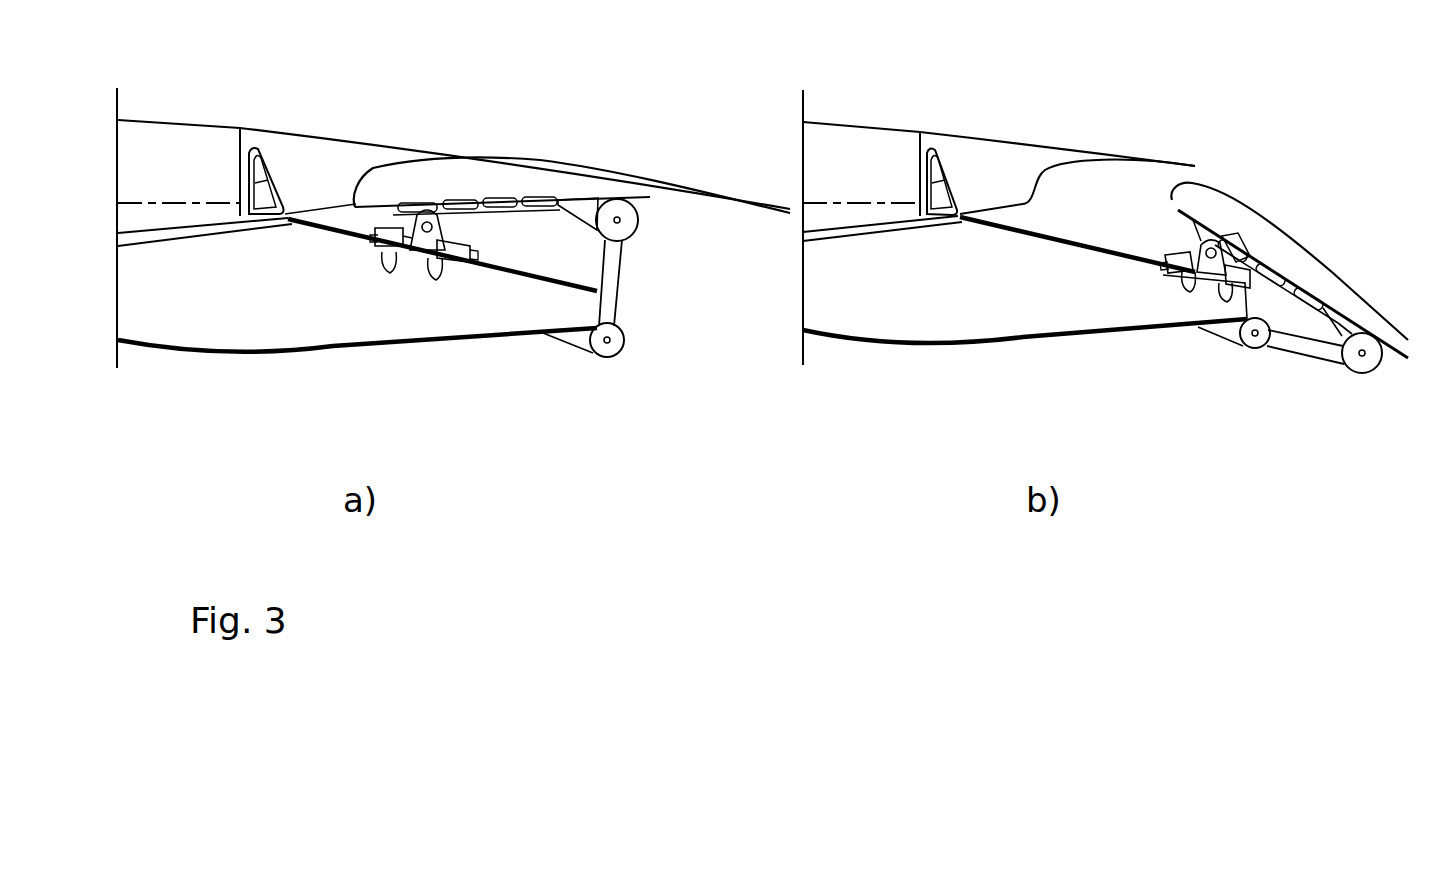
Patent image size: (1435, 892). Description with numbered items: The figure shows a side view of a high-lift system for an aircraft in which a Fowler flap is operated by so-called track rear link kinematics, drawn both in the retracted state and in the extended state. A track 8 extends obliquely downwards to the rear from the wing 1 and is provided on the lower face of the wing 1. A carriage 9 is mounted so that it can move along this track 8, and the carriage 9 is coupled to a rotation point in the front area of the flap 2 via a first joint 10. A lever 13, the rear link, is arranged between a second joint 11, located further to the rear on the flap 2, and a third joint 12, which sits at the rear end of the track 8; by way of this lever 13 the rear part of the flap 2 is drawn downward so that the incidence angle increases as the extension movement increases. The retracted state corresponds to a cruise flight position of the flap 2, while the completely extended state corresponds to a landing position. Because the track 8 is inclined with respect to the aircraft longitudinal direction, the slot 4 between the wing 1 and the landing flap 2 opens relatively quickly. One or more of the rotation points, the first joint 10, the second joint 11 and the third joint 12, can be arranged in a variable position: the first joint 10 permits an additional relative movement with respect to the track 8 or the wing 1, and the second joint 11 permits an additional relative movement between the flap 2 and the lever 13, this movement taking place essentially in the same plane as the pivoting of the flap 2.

In FIG. 3a, the wing 1 is at (320, 167).
In FIG. 3b, the wing 1 is at (993, 153).
In FIG. 3a, the flap 2 is at (485, 182).
In FIG. 3b, the flap 2 is at (1228, 207).
In FIG. 3b, the slot 4 is at (1112, 195).
In FIG. 3a, the track 8 is at (313, 228).
In FIG. 3b, the track 8 is at (1078, 243).
In FIG. 3a, the carriage 9 is at (422, 235).
In FIG. 3b, the carriage 9 is at (1180, 282).
In FIG. 3b, the first joint 10 is at (1233, 245).
In FIG. 3a, the second joint 11 is at (620, 224).
In FIG. 3b, the second joint 11 is at (1362, 353).
In FIG. 3a, the third joint 12 is at (607, 346).
In FIG. 3b, the third joint 12 is at (1255, 333).
In FIG. 3a, the lever 13 is at (610, 283).